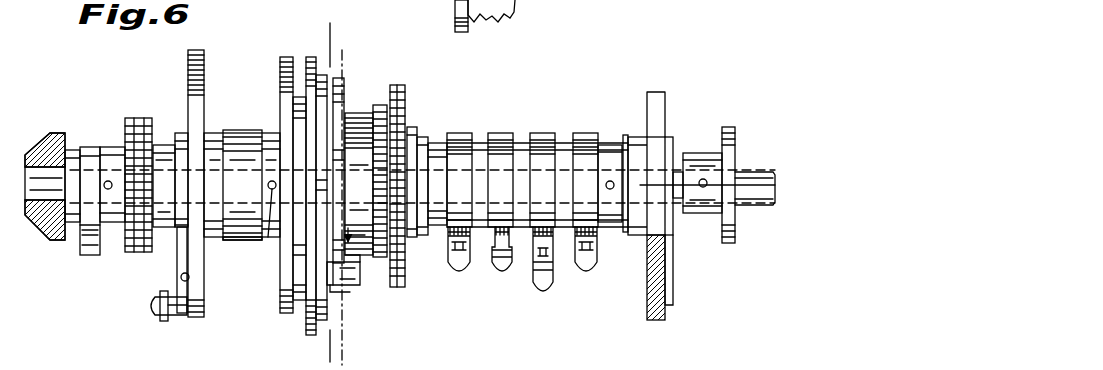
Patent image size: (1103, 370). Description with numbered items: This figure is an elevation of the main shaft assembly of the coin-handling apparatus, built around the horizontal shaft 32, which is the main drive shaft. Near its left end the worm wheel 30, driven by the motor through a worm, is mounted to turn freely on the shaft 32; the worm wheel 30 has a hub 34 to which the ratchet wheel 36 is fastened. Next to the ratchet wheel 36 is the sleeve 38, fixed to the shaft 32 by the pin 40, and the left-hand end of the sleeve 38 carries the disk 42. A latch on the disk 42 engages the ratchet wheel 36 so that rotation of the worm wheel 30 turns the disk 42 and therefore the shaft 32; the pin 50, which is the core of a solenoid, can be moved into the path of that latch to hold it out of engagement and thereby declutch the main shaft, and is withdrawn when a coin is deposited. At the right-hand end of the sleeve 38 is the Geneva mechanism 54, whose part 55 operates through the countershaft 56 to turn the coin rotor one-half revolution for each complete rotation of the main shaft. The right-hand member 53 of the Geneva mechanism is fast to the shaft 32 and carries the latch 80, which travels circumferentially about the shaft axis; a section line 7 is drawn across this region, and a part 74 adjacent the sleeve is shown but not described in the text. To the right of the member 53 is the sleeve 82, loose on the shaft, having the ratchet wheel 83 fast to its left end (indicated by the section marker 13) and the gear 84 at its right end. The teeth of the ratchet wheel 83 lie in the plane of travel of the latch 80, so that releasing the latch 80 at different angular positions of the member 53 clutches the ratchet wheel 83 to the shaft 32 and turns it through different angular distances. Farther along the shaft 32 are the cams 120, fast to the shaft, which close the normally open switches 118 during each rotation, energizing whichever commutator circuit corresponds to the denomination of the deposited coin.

The section line 7- 7 is at (323, 33).
The plate 13 is at (345, 62).
The worm wheel 30 is at (140, 118).
The horizontal shaft 32 is at (753, 178).
The hub 34 is at (167, 233).
The ratchet wheel 36 is at (182, 133).
The sleeve 38 is at (242, 198).
The pin 40 is at (240, 240).
The disk 42 is at (196, 95).
The pin 50 is at (173, 316).
The right-hand member of Geneva mechanism 53 is at (310, 320).
The Geneva mechanism 54 is at (291, 48).
The part of Geneva mechanism 55 is at (455, 3).
The countershaft 56 is at (510, 15).
The flange 74 is at (238, 240).
The latch 80 is at (347, 284).
The sleeve 82 is at (352, 113).
The ratchet wheel 83 is at (345, 80).
The gear 84 is at (405, 100).
The switches 118 is at (518, 303).
The cams 120 is at (534, 115).